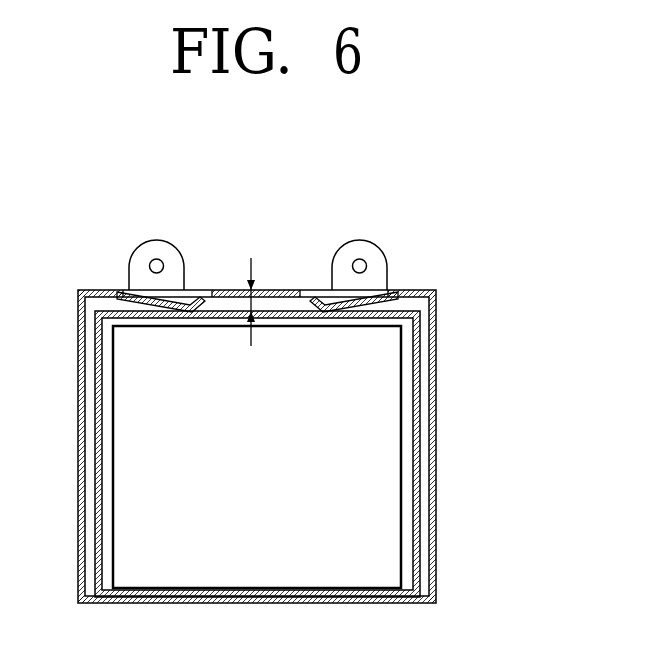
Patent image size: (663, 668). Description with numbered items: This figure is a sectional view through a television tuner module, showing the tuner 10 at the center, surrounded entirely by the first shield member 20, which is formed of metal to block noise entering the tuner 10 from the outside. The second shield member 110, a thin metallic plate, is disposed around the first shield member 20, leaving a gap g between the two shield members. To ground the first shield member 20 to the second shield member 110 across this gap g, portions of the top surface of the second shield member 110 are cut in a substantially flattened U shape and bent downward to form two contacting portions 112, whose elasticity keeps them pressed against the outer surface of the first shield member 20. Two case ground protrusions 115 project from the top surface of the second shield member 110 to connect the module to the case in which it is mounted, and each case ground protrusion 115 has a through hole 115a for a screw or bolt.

The tuner 10 is at (388, 463).
The first shield member 20 is at (416, 404).
The second shield member 110 is at (433, 338).
The contacting portion 112 is at (158, 300).
The case ground protrusion 115 is at (340, 247).
The through hole 115a is at (360, 266).
The gap g is at (259, 301).